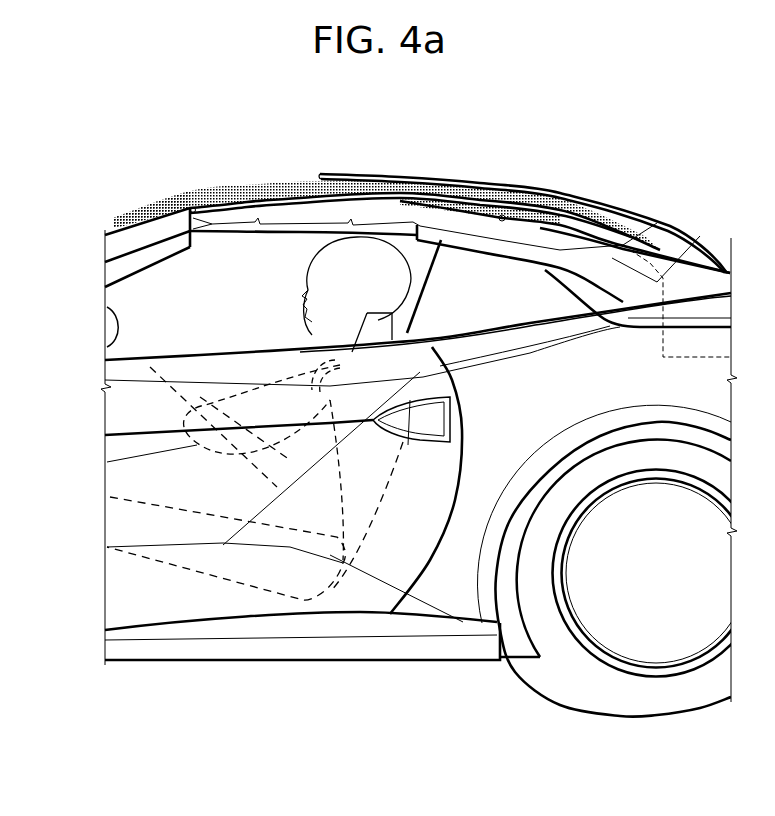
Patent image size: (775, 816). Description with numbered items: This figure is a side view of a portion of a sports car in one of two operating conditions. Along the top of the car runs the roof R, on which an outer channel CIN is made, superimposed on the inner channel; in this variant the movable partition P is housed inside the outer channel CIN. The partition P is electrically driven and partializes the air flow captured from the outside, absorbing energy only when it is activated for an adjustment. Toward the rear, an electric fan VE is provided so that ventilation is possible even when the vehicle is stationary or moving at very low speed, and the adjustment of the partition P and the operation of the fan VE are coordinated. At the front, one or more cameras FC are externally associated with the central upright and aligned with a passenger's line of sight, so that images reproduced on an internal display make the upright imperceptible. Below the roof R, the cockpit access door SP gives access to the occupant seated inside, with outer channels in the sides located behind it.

The camera FC is at (195, 208).
The outer channel CIN is at (310, 183).
The roof R is at (449, 178).
The movable partition P is at (544, 217).
The electric fan VE is at (657, 282).
The cockpit access door SP is at (227, 597).